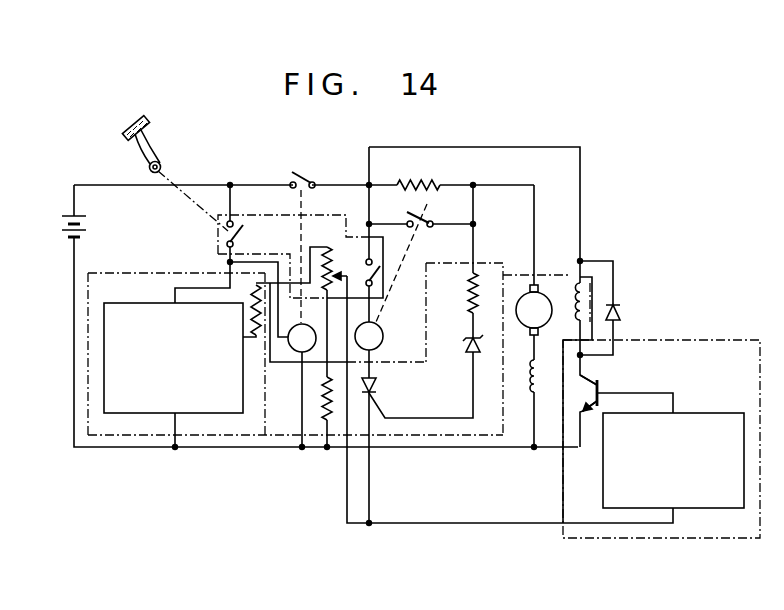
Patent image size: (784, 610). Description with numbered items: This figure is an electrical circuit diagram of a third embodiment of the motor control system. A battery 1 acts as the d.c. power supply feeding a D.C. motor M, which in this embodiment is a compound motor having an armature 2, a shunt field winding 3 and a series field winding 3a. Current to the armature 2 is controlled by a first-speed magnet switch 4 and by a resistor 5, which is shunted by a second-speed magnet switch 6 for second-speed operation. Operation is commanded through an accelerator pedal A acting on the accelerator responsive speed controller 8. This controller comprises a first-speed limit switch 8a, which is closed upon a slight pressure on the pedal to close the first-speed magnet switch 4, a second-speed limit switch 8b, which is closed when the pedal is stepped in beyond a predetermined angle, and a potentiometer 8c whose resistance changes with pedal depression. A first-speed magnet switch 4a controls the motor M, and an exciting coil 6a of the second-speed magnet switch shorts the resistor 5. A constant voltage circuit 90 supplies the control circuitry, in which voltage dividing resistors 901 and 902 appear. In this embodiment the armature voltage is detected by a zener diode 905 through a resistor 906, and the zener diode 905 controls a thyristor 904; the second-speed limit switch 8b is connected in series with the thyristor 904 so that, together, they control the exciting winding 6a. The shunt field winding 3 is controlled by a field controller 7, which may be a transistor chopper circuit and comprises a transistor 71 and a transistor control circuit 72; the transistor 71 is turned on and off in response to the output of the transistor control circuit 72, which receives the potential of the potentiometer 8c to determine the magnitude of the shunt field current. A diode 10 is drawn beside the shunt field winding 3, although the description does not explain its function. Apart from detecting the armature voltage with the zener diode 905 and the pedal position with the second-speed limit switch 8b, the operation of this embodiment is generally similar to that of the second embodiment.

The battery 1 is at (67, 243).
The accelerator pedal A is at (164, 128).
The first-speed magnet switch 4 is at (292, 181).
The resistor 5 is at (420, 181).
The second-speed magnet switch 6 is at (418, 226).
The accelerator responsive speed controller 8 is at (218, 245).
The first-speed limit switch 8a is at (242, 238).
The second-speed limit switch 8b is at (378, 279).
The potentiometer 8c is at (336, 259).
The first-speed magnet switch 4a is at (298, 362).
The exciting coil of second-speed magnet switch 6a is at (383, 342).
The constant voltage circuit 90 is at (150, 303).
The voltage dividing resistor 901 is at (259, 342).
The voltage dividing resistor 902 is at (319, 406).
The thyristor 904 is at (374, 385).
The zener diode 905 is at (468, 353).
The resistor 906 is at (497, 258).
The armature 2 is at (526, 327).
The D.C. motor M is at (568, 275).
The shunt field winding 3 is at (585, 291).
The series field winding 3a is at (530, 378).
The diode 10 is at (623, 313).
The field controller 7 is at (703, 339).
The transistor 71 is at (593, 377).
The transistor control circuit 72 is at (698, 412).